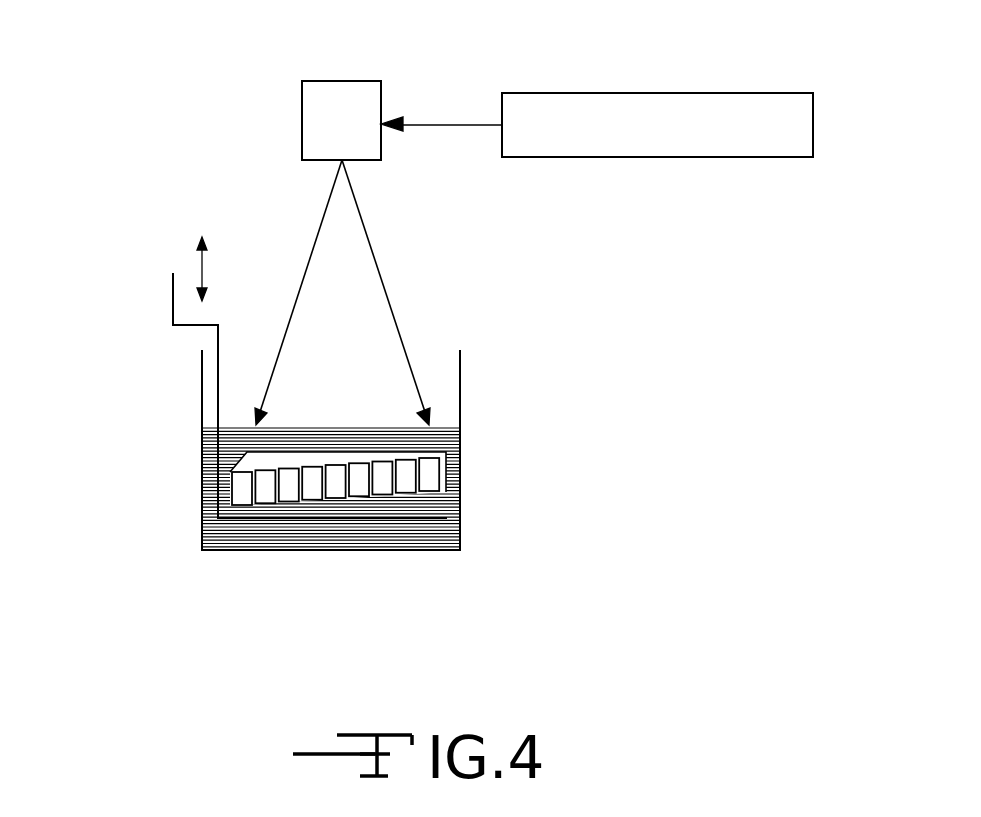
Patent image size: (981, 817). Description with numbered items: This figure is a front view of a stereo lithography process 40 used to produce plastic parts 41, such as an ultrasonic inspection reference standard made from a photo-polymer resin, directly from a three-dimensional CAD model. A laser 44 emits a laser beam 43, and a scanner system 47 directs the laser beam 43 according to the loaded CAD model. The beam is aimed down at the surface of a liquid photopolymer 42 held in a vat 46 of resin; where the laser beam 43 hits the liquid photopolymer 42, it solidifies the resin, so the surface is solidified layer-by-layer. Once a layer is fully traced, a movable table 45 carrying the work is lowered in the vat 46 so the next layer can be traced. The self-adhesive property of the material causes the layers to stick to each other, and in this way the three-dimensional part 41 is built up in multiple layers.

The stereolithography system 40 is at (605, 255).
The plastic parts 41 is at (248, 462).
The liquid photopolymer 42 is at (397, 535).
The laser beam 43 is at (308, 262).
The laser 44 is at (735, 95).
The movable table 45 is at (170, 293).
The vat 46 is at (202, 517).
The scanner system 47 is at (332, 81).